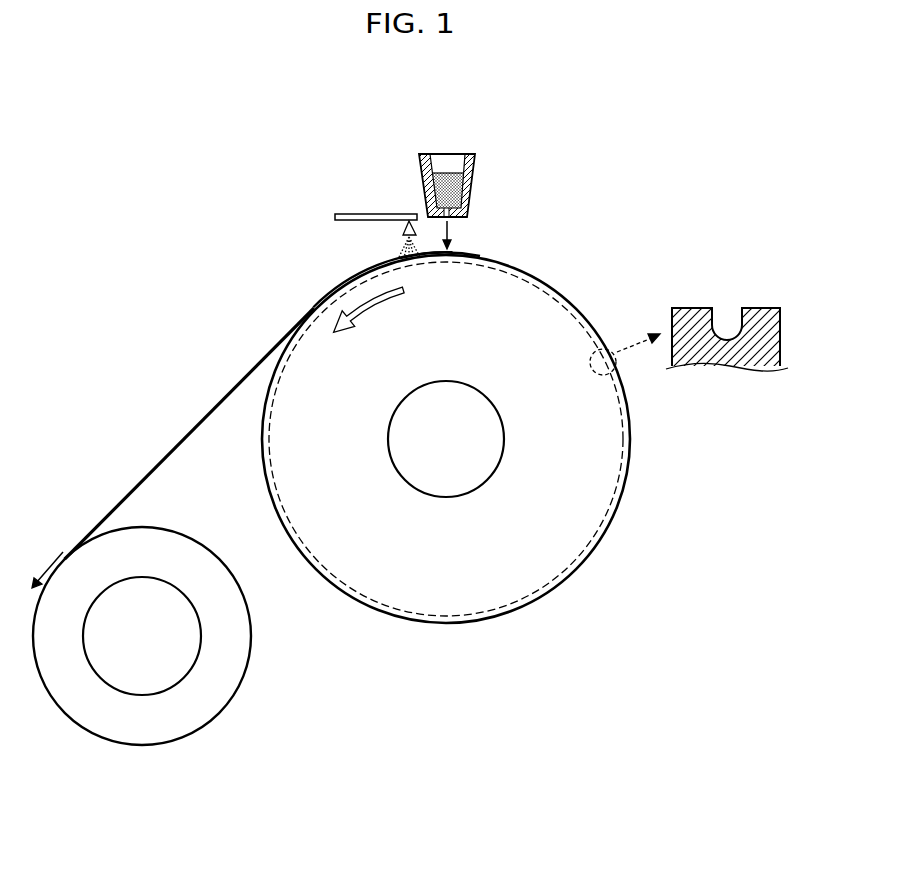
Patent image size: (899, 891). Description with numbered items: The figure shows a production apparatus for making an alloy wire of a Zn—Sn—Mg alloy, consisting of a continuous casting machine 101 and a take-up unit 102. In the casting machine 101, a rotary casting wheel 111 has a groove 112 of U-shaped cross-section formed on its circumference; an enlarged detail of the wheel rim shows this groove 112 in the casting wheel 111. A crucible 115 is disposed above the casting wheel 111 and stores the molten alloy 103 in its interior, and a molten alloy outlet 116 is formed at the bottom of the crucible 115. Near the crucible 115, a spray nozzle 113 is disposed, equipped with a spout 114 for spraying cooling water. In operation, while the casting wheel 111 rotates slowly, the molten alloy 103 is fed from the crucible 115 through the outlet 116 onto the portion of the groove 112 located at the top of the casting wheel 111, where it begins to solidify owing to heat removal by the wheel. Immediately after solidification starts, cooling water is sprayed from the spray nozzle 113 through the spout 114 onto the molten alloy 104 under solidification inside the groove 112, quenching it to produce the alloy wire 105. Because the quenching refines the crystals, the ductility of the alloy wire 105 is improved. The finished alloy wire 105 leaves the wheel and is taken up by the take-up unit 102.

The continuous casting machine 101 is at (566, 580).
The take-up unit 102 is at (249, 672).
The molten alloy 103 is at (448, 172).
The molten alloy under solidification 104 is at (432, 260).
The alloy wire 105 is at (200, 427).
The rotary casting wheel 111 is at (600, 445).
The groove 112 is at (556, 293).
The spray nozzle 113 is at (378, 213).
The spout 114 is at (398, 243).
The crucible 115 is at (473, 182).
The molten alloy outlet 116 is at (468, 205).